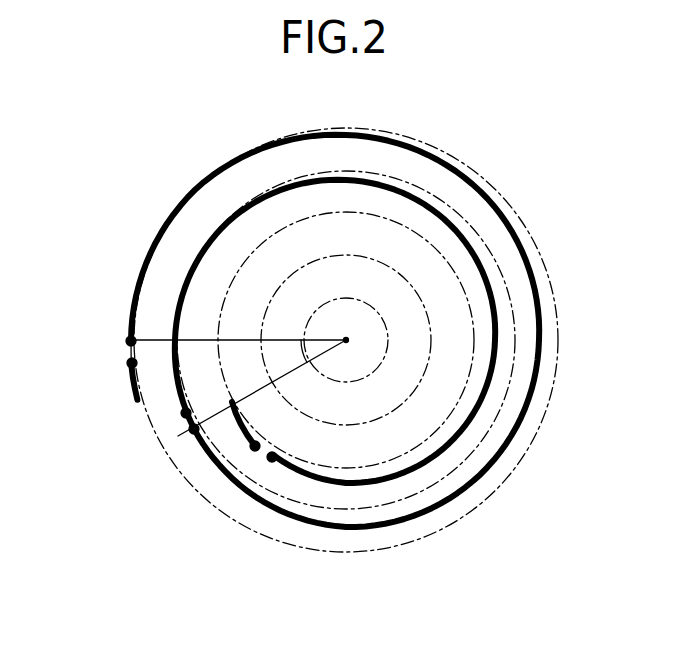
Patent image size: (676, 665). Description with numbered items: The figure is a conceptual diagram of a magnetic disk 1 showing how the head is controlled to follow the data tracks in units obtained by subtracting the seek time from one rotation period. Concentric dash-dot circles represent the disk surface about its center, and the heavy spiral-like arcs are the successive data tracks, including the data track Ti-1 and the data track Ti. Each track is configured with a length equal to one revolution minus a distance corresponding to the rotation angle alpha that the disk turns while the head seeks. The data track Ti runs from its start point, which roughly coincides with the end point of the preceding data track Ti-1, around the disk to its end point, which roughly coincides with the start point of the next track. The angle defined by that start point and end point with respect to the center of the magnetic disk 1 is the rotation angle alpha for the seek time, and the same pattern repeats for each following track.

The magnetic disk 1 is at (92, 131).
The data track Ti-1 is at (134, 392).
The data track Ti is at (268, 146).